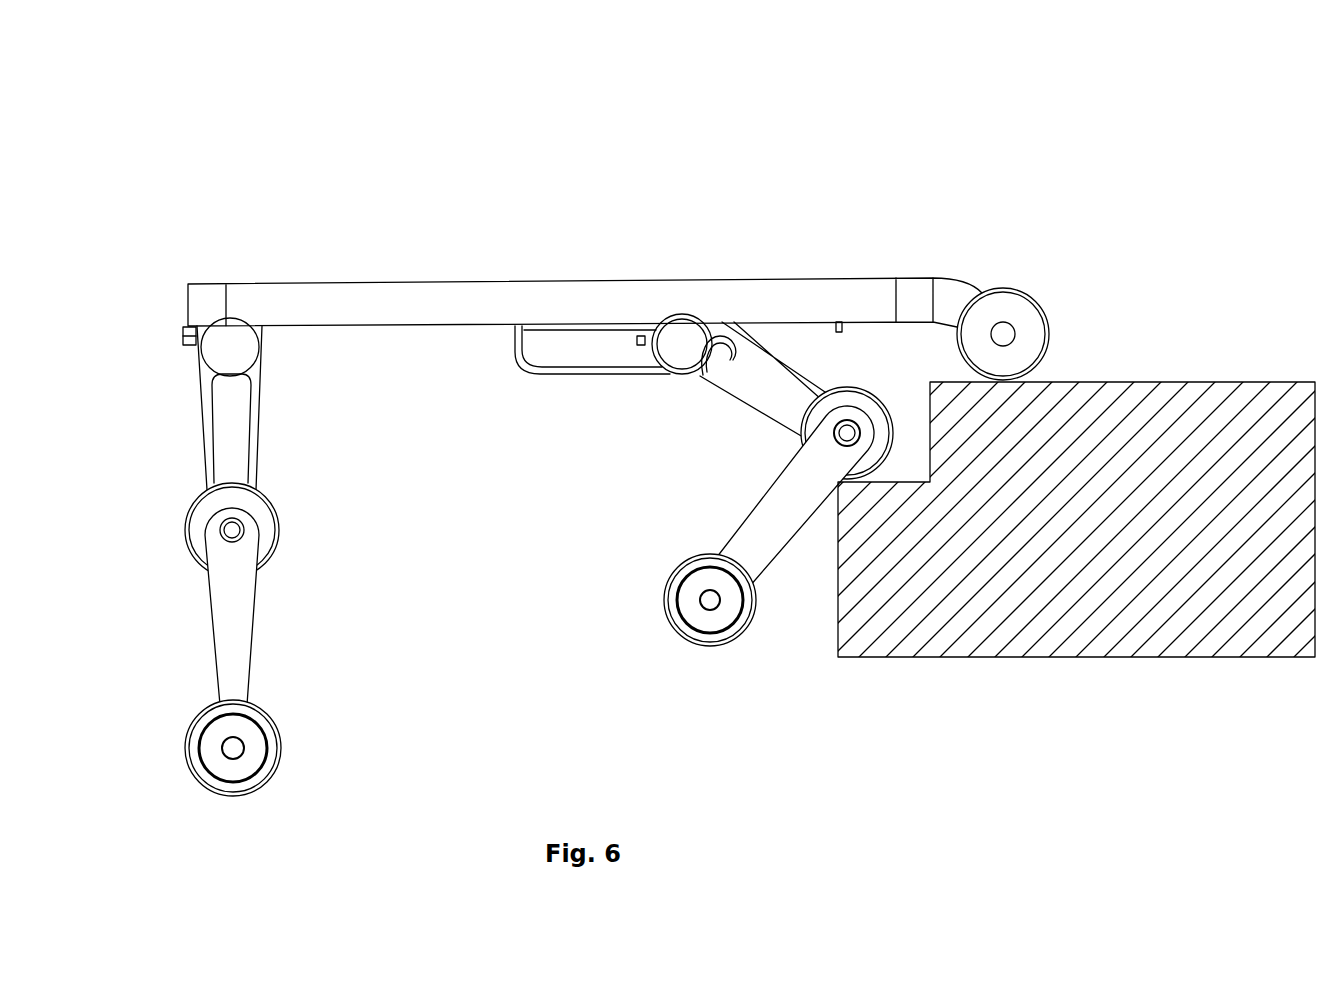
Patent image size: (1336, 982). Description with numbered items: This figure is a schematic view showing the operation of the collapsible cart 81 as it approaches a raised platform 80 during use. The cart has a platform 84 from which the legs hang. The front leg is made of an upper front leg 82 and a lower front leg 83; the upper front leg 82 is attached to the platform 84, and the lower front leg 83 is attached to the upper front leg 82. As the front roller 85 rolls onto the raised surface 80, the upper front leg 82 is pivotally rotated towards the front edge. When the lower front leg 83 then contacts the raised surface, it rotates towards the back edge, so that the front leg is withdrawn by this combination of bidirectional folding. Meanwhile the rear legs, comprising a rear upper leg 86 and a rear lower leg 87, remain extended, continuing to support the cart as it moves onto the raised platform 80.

The raised platform 80 is at (1073, 465).
The collapsible cart 81 is at (462, 188).
The upper front leg 82 is at (714, 405).
The lower front leg 83 is at (743, 508).
The platform 84 is at (635, 269).
The front roller 85 is at (1005, 308).
The rear upper leg 86 is at (270, 446).
The rear lower leg 87 is at (265, 632).